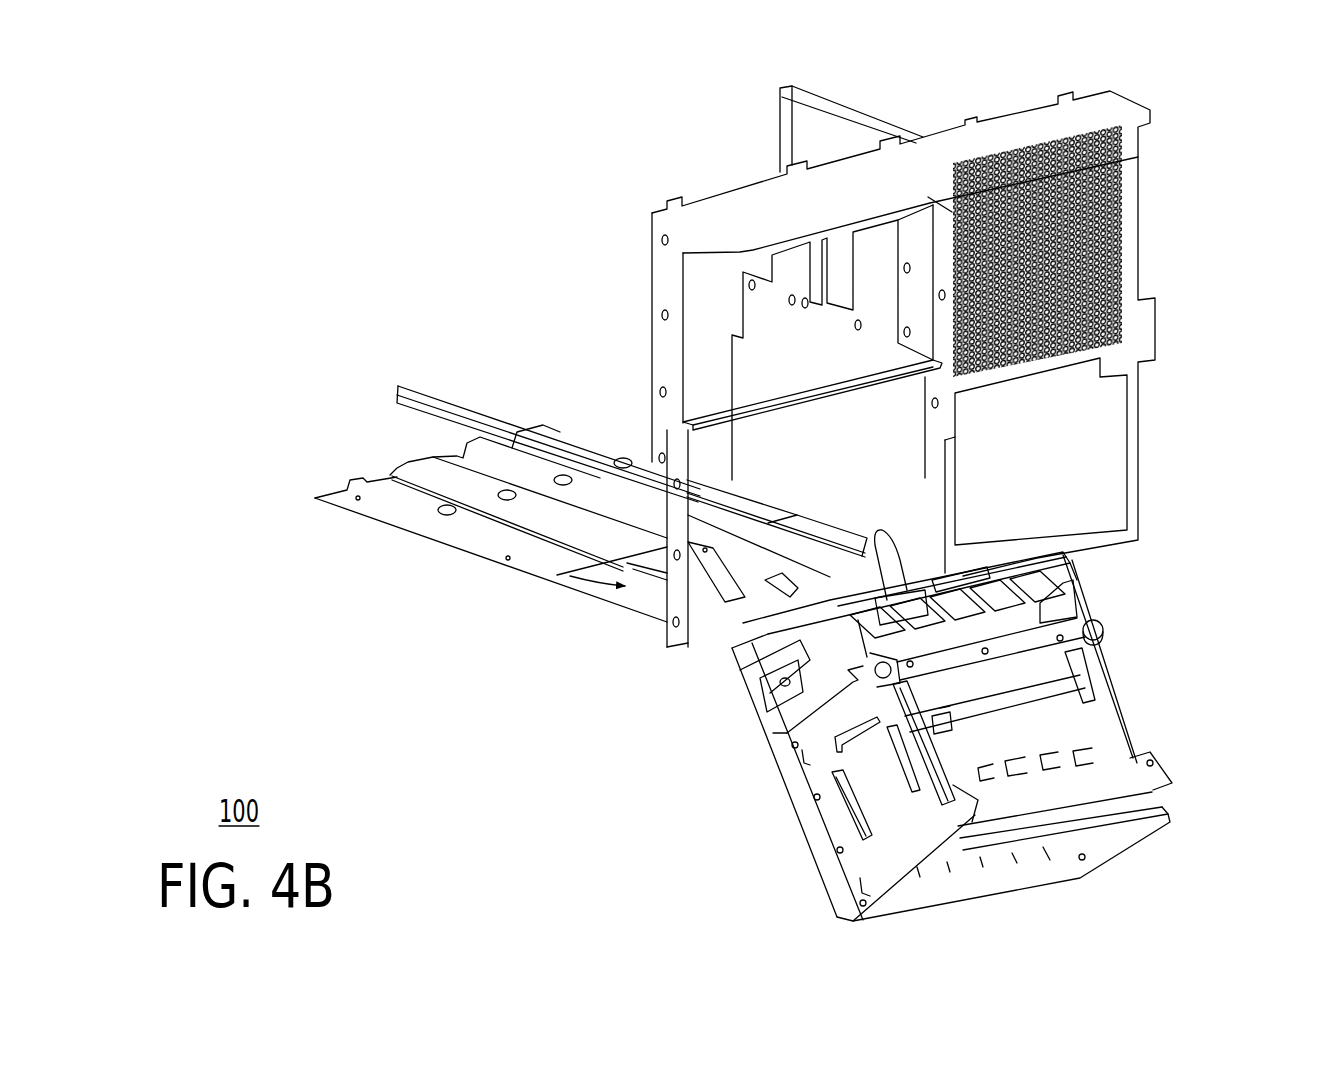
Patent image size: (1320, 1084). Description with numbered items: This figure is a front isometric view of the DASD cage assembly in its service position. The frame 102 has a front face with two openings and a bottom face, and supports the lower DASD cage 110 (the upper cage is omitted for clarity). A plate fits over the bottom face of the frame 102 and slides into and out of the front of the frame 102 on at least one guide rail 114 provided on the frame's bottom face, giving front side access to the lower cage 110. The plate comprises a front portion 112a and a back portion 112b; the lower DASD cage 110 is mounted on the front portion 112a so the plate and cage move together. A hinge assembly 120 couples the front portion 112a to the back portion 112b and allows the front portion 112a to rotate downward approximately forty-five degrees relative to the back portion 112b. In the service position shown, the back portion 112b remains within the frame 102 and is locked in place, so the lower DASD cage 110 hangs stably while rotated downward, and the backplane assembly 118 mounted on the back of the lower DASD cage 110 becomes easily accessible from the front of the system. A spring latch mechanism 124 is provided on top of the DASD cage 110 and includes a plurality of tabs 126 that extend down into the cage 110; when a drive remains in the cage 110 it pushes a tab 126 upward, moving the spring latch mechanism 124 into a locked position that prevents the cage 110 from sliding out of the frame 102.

The frame 102 is at (1152, 338).
The lower DASD cage 110 is at (827, 823).
The front portion of the plate 112a is at (777, 760).
The back portion of the plate 112b is at (560, 577).
The guide rail 114 is at (417, 477).
The backplane assembly 118 is at (1027, 588).
The hinge assembly 120 is at (732, 648).
The spring latch mechanism 124 is at (1125, 777).
The tabs 126 is at (1002, 784).